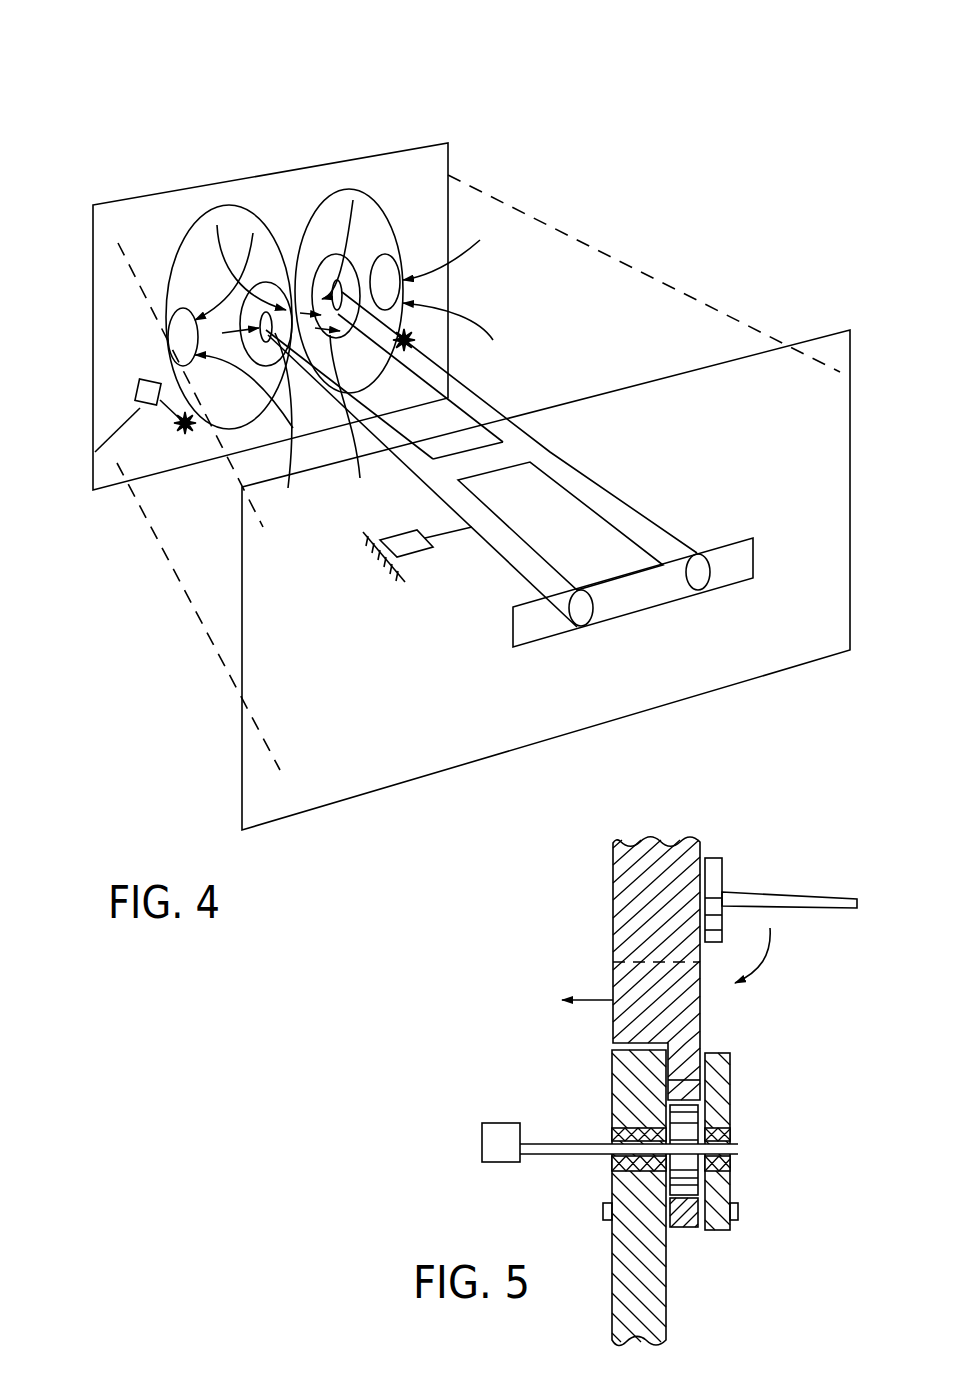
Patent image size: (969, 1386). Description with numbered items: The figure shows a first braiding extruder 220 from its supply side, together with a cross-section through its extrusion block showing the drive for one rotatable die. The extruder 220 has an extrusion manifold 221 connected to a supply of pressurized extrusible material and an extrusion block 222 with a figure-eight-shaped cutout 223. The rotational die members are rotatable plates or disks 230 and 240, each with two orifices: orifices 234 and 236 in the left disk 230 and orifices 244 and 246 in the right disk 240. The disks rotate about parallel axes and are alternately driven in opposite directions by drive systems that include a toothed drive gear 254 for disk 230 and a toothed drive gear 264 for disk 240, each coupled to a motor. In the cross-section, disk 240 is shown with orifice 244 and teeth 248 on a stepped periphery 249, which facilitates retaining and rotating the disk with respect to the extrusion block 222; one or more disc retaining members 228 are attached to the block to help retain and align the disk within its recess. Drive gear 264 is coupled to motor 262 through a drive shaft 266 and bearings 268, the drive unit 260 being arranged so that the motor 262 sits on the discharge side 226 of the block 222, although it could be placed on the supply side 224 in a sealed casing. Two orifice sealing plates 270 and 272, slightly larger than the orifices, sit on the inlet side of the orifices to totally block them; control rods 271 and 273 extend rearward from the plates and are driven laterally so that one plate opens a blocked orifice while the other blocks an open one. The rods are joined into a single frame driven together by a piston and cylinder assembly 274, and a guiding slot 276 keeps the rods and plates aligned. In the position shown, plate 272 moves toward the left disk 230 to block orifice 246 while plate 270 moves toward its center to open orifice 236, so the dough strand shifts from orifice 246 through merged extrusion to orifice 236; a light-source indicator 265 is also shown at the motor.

In FIG. 4, the braiding extruder 220 is at (507, 100).
In FIG. 4, the extrusion manifold 221 is at (690, 344).
In FIG. 4, the extrusion block 222 is at (428, 158).
In FIG. 5, the figure-eight-shaped cutout 223 is at (613, 1049).
In FIG. 5, the supply side 224 is at (860, 1078).
In FIG. 5, the discharge side 226 is at (560, 993).
In FIG. 5, the disc retaining member 228 is at (730, 1112).
In FIG. 4, the rotatable disk 230 is at (378, 185).
In FIG. 4, the orifice 234 is at (403, 254).
In FIG. 4, the orifice 236 is at (304, 236).
In FIG. 4, the rotatable disk 240 is at (223, 206).
In FIG. 5, the rotatable disk 240 is at (615, 887).
In FIG. 4, the orifice 244 is at (180, 312).
In FIG. 4, the orifice 246 is at (278, 232).
In FIG. 5, the teeth 248 is at (695, 1089).
In FIG. 5, the stepped periphery 249 is at (700, 1057).
In FIG. 4, the toothed drive gear 254 is at (415, 343).
In FIG. 4, the drive unit 260 is at (96, 452).
In FIG. 5, the drive unit 260 is at (486, 1174).
In FIG. 4, the motor 262 is at (136, 392).
In FIG. 5, the motor 262 is at (482, 1130).
In FIG. 4, the toothed drive gear 264 is at (187, 443).
In FIG. 5, the toothed drive gear 264 is at (732, 1198).
In FIG. 4, the light source 265 is at (176, 412).
In FIG. 5, the drive shaft 266 is at (567, 1156).
In FIG. 5, the bearings 268 is at (700, 1176).
In FIG. 4, the sealing plate 270 is at (361, 426).
In FIG. 4, the control rod 271 is at (623, 470).
In FIG. 4, the sealing plate 272 is at (422, 480).
In FIG. 5, the sealing plate 272 is at (718, 873).
In FIG. 4, the control rod 273 is at (513, 557).
In FIG. 5, the control rod 273 is at (810, 897).
In FIG. 4, the piston and cylinder assembly 274 is at (423, 548).
In FIG. 4, the guiding slot 276 is at (657, 594).